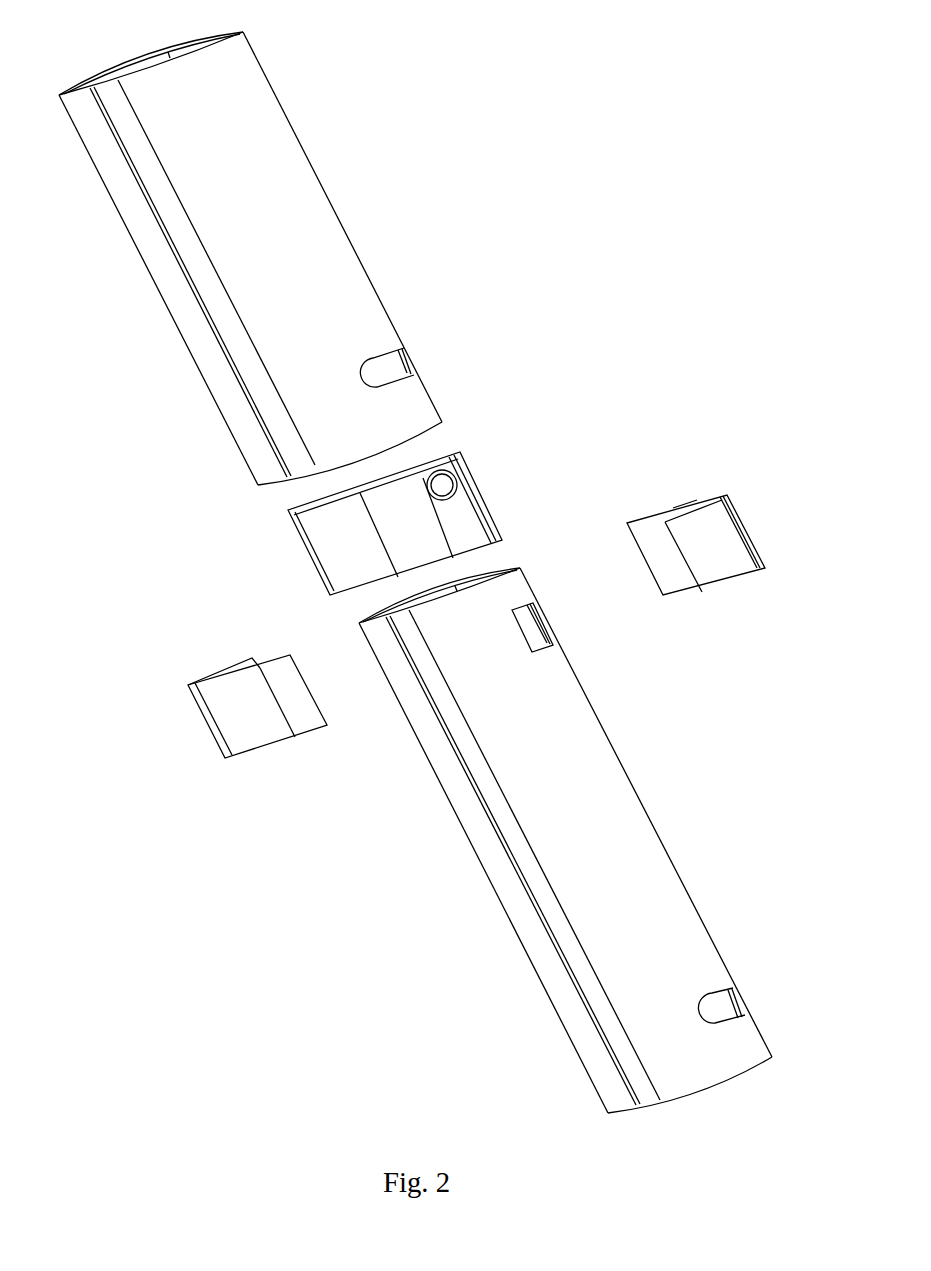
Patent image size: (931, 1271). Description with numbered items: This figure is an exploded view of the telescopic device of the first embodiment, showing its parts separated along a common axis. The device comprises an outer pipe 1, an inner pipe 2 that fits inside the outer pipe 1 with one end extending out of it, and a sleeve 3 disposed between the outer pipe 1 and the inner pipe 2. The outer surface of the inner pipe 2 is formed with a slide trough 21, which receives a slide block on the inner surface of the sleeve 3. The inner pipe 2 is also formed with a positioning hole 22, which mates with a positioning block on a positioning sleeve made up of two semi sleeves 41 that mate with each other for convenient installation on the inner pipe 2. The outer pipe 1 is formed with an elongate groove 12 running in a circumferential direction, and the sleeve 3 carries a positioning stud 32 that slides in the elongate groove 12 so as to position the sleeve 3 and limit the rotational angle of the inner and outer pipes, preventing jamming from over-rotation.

The outer pipe 1 is at (288, 258).
The elongate groove 12 is at (415, 367).
The inner pipe 2 is at (565, 840).
The slide trough 21 is at (523, 883).
The positioning hole 22 is at (548, 632).
The sleeve 3 is at (429, 505).
The positioning stud 32 is at (445, 487).
The semi sleeve 41 is at (297, 705).